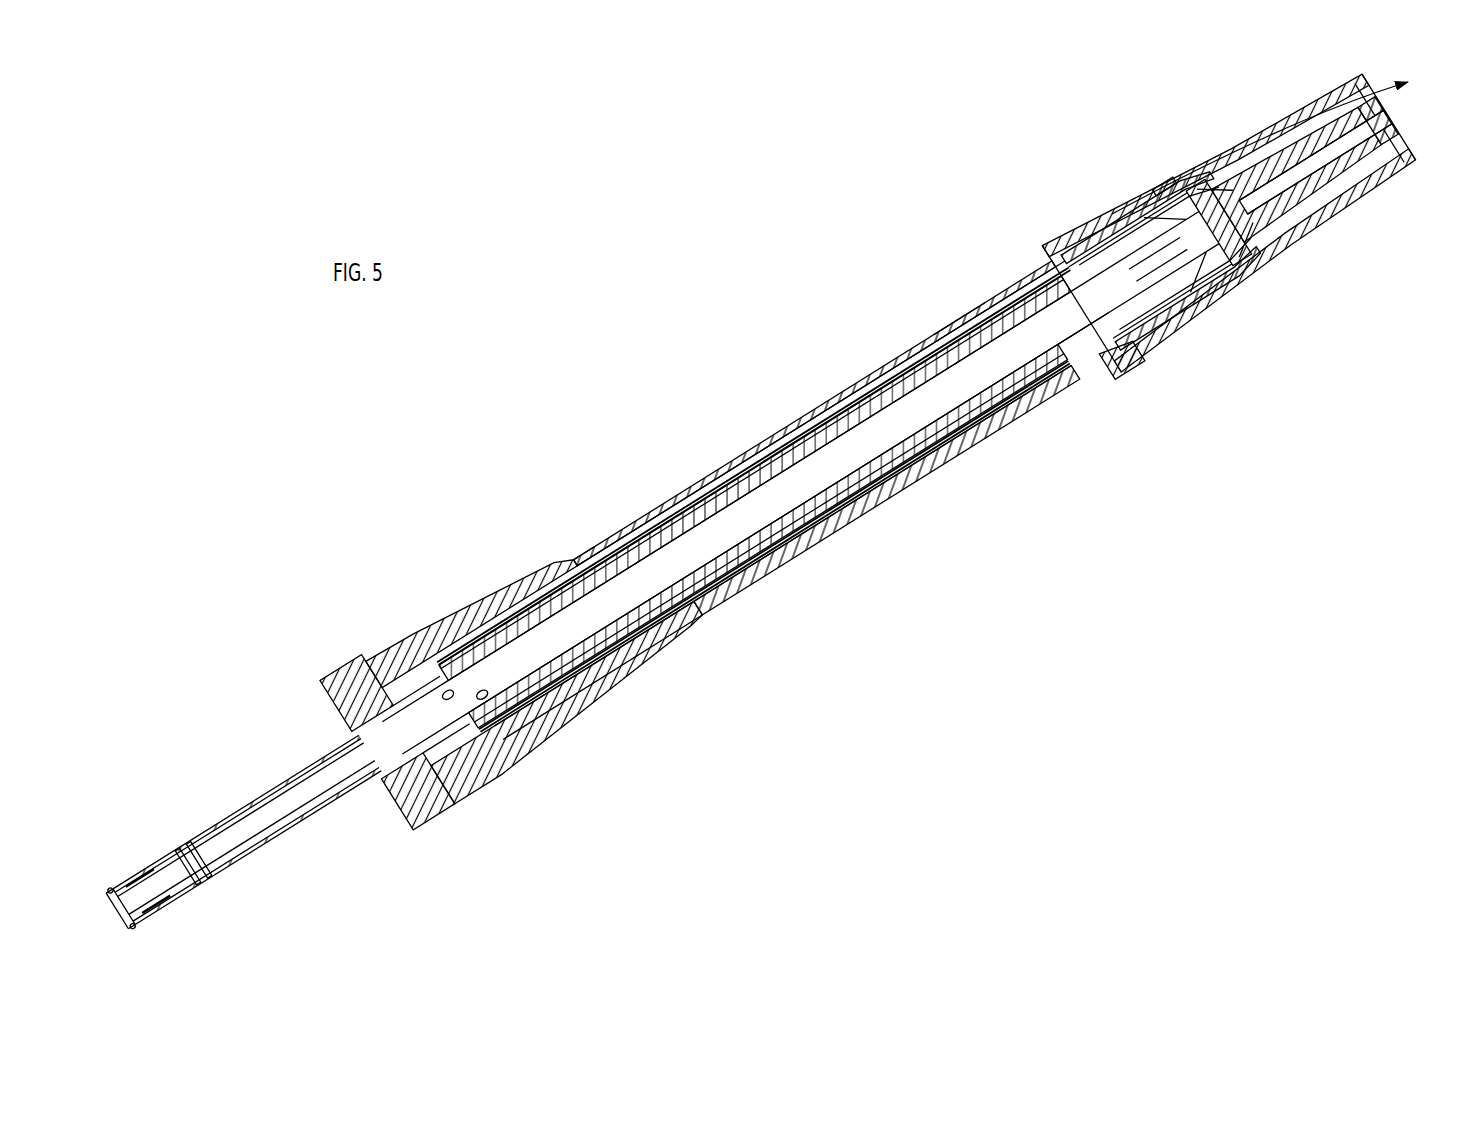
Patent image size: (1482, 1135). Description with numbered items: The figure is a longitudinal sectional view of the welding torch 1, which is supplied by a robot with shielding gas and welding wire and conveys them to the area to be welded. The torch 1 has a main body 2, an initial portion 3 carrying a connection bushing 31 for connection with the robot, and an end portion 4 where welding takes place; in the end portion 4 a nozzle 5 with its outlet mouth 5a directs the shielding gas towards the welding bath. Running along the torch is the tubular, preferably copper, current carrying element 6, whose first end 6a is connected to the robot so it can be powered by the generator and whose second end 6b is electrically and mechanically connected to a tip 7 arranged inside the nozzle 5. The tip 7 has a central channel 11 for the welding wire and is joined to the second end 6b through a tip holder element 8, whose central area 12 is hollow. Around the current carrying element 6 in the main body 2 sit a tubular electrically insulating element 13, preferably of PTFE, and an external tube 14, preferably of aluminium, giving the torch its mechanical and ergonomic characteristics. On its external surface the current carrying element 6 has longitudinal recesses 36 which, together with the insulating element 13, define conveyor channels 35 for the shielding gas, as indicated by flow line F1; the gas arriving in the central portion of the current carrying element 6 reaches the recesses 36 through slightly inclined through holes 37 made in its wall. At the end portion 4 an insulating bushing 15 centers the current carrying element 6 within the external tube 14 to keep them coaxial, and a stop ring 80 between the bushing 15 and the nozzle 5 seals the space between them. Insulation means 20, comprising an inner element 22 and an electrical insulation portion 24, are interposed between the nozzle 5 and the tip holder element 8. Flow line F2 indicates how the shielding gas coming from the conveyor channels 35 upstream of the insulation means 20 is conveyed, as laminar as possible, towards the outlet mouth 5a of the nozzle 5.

The torch 1 is at (1210, 709).
The main body 2 is at (934, 572).
The initial portion 3 is at (660, 743).
The end portion 4 is at (1290, 396).
The nozzle 5 is at (1340, 213).
The outlet mouth 5a is at (1413, 107).
The current carrying element 6 is at (662, 540).
The first end 6a is at (508, 505).
The second end 6b is at (950, 238).
The tip 7 is at (1347, 157).
The tip holder element 8 is at (1207, 260).
The central channel 11 is at (1390, 128).
The central area 12 is at (1200, 230).
The electrically insulating element 13 is at (795, 430).
The external tube 14 is at (873, 377).
The insulating bushing 15 is at (1087, 373).
The insulation means 20 is at (1320, 278).
The inner element 22 is at (1140, 203).
The electrical insulation portion 24 is at (1167, 188).
The connection bushing 31 is at (400, 643).
The conveyor channels 35 is at (713, 475).
The recesses 36 is at (587, 560).
The through holes 37 is at (478, 690).
The stop ring 80 is at (1123, 363).
The flow line F1 is at (290, 800).
The flow line F2 is at (1325, 117).